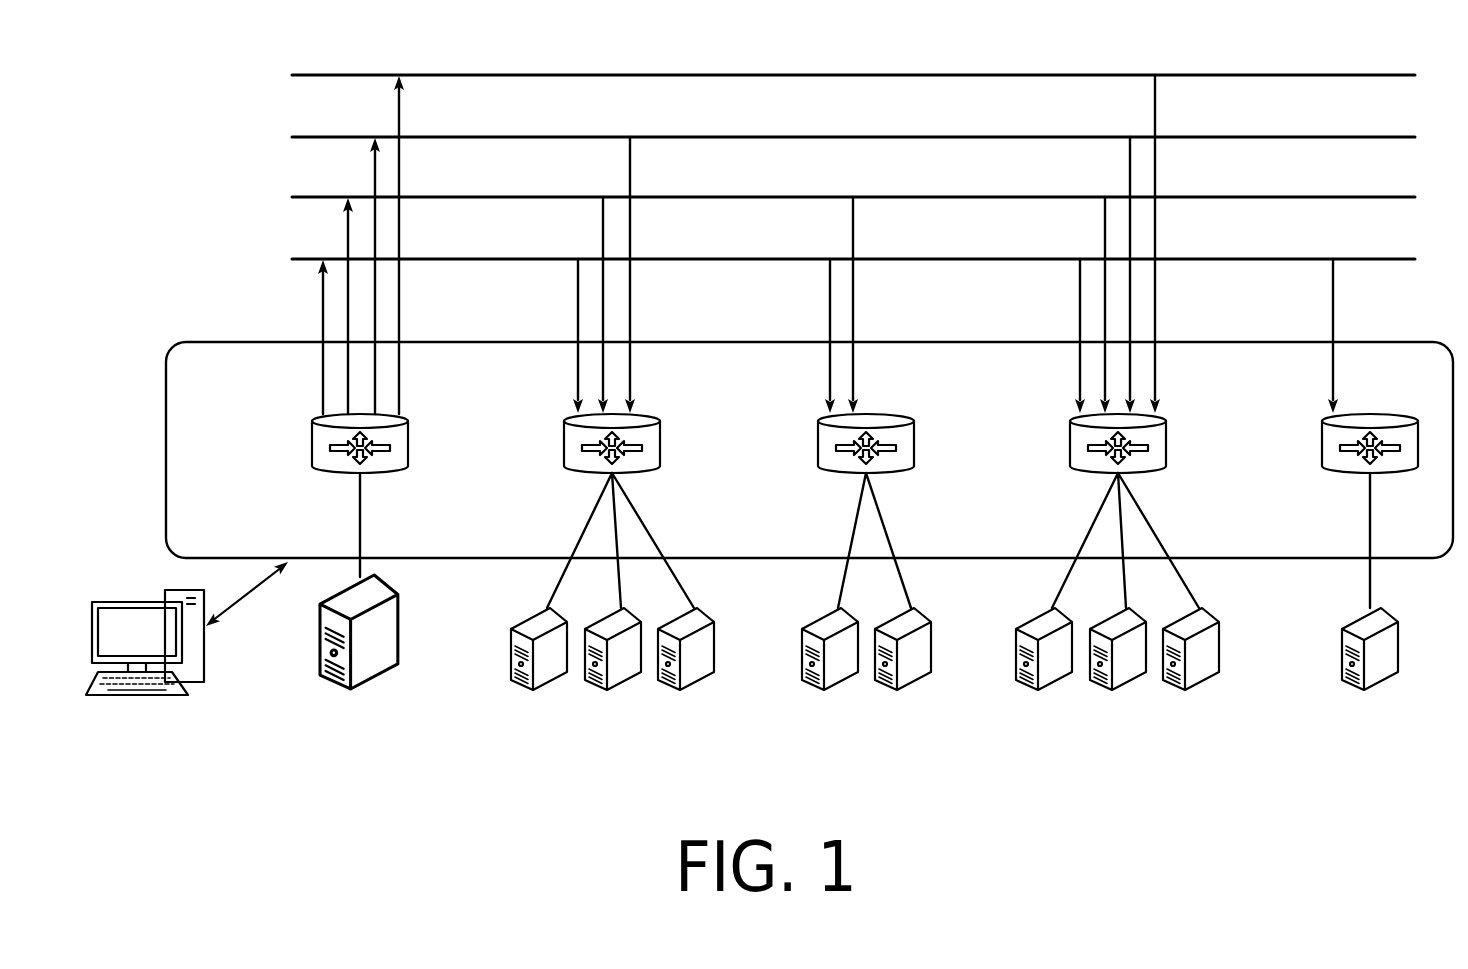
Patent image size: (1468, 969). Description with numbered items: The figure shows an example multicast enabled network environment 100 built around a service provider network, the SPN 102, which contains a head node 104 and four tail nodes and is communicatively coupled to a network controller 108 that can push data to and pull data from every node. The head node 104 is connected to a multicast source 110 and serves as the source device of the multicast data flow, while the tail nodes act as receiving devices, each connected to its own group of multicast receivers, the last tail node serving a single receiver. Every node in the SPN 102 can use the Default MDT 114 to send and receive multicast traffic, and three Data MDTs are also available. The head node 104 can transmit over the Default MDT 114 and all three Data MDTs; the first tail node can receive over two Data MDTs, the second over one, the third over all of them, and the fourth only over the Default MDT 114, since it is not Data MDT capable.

The environment 100 is at (1313, 27).
The SPN 102 is at (284, 330).
The head node 104 is at (301, 495).
The network controller 108 is at (188, 668).
The multicast source 110 is at (360, 674).
The Default MDT 114 is at (752, 329).